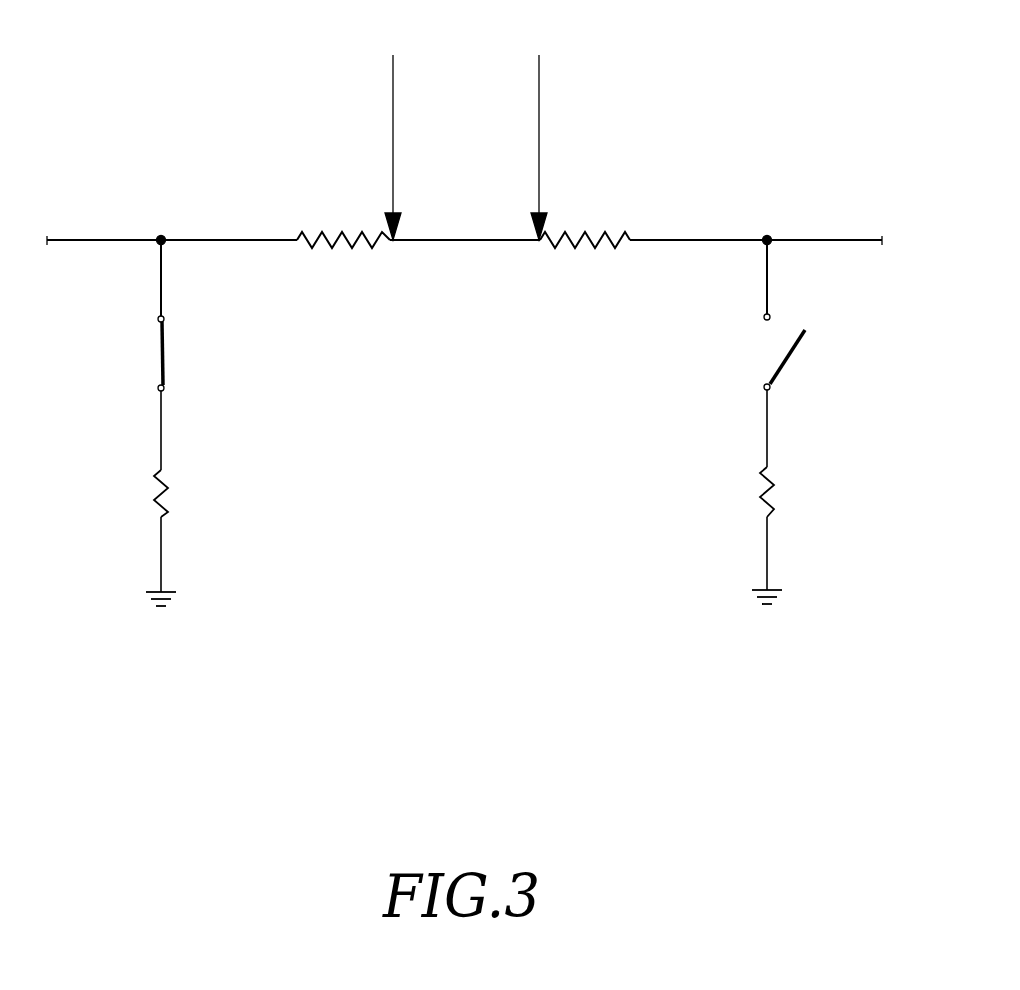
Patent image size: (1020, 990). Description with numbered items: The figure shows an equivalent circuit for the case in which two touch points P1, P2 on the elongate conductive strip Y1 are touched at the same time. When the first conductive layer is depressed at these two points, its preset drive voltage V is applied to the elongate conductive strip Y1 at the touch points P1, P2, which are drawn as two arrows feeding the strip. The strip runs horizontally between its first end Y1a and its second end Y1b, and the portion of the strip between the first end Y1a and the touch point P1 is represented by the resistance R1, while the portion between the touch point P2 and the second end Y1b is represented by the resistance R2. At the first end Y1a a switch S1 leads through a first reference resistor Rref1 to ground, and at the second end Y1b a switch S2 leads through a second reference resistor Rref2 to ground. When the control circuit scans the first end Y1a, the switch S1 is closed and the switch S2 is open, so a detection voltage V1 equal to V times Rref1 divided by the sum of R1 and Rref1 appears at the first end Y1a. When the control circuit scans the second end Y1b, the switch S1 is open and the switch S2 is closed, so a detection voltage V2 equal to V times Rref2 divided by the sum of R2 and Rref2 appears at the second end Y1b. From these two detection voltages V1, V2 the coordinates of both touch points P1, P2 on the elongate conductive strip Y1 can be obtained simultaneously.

The drive voltage V is at (468, 128).
The detection voltage at first end V1 is at (101, 240).
The detection voltage at second end V2 is at (825, 240).
The elongate conductive strip Y1 is at (480, 272).
The first end of the elongate conductive strip Y1a is at (161, 240).
The second end of the elongate conductive strip Y1b is at (767, 240).
The first touch point P1 is at (400, 240).
The second touch point P2 is at (535, 240).
The first strip resistance R1 is at (362, 248).
The second strip resistance R2 is at (602, 248).
The first switch S1 is at (165, 355).
The second switch S2 is at (795, 350).
The first reference resistor Rref1 is at (170, 495).
The second reference resistor Rref2 is at (775, 495).